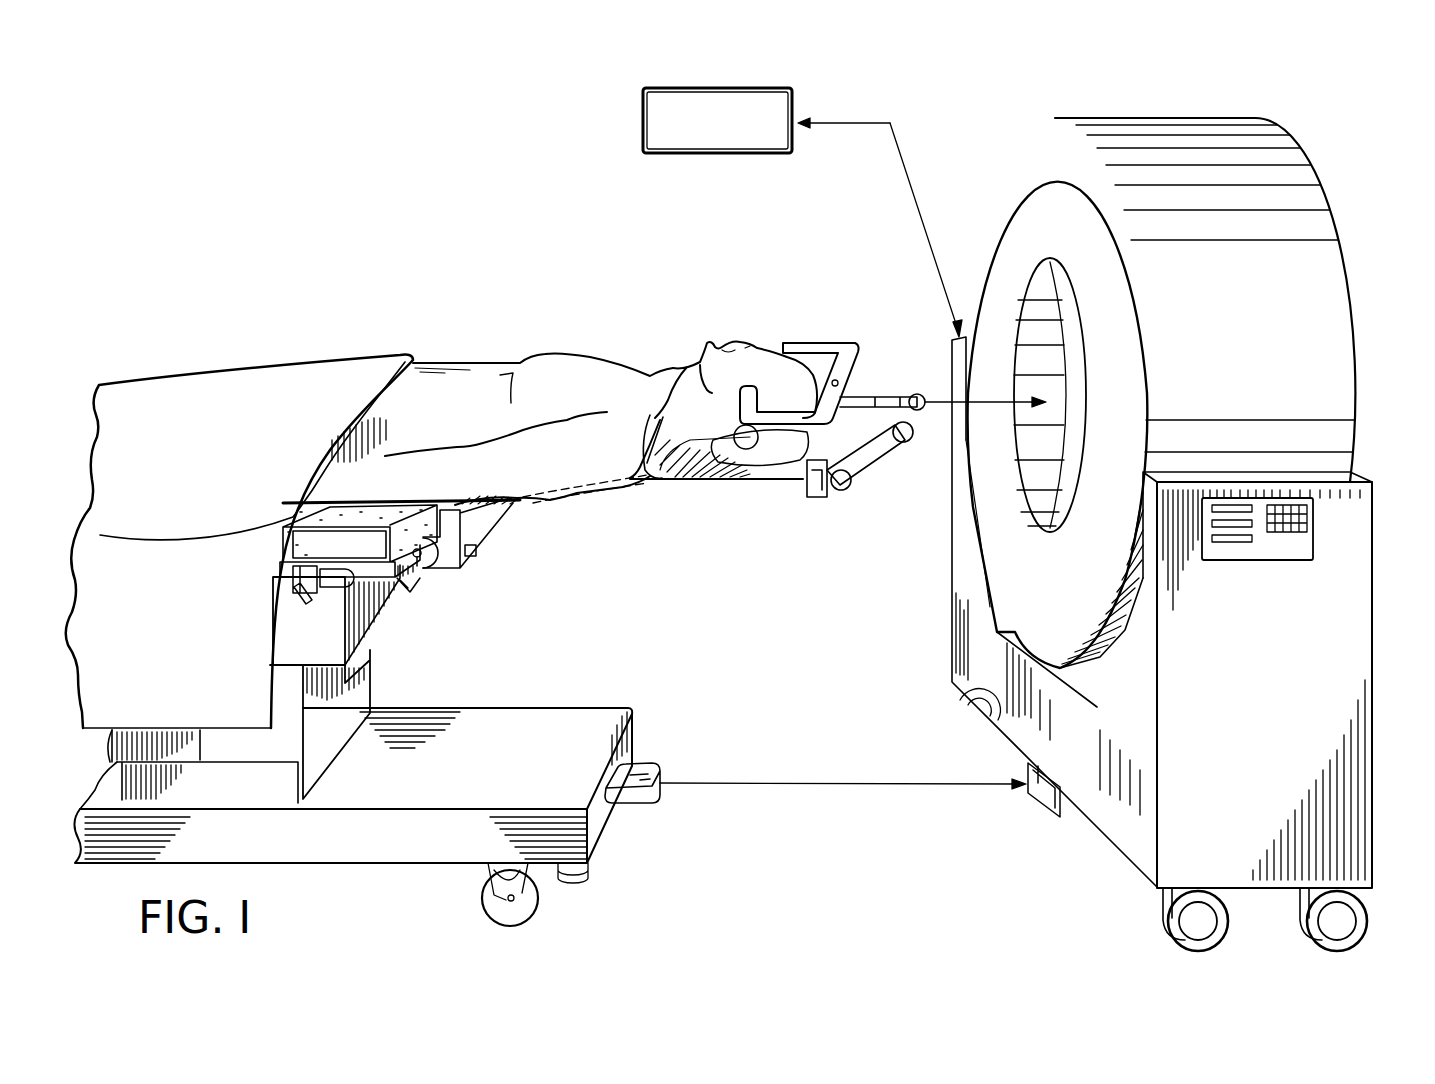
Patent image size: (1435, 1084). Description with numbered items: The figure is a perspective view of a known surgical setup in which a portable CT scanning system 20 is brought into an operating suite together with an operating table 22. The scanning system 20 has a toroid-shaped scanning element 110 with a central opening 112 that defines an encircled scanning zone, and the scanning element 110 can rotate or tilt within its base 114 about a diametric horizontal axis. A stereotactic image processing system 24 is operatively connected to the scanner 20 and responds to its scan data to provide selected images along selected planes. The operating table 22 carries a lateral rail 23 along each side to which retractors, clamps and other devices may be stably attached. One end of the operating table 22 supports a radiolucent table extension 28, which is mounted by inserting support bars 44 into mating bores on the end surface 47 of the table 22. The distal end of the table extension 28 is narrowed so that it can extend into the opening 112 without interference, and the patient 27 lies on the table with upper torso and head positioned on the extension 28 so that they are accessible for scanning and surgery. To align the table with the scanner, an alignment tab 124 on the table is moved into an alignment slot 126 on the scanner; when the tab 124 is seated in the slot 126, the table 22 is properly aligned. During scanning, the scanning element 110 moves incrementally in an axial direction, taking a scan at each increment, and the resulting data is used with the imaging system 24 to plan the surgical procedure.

The portable CT scanning system 20 is at (1030, 534).
The operating table 22 is at (504, 768).
The lateral rail 23 is at (322, 590).
The stereotactic image processing system 24 is at (713, 154).
The patient 27 is at (587, 368).
The radiolucent table extension 28 is at (680, 482).
The support bars 44 is at (418, 566).
The end surface 47 is at (403, 580).
The scanning element 110 is at (1244, 328).
The central opening 112 is at (1078, 506).
The base 114 is at (970, 665).
The alignment tab 124 is at (642, 762).
The alignment slot 126 is at (1026, 764).